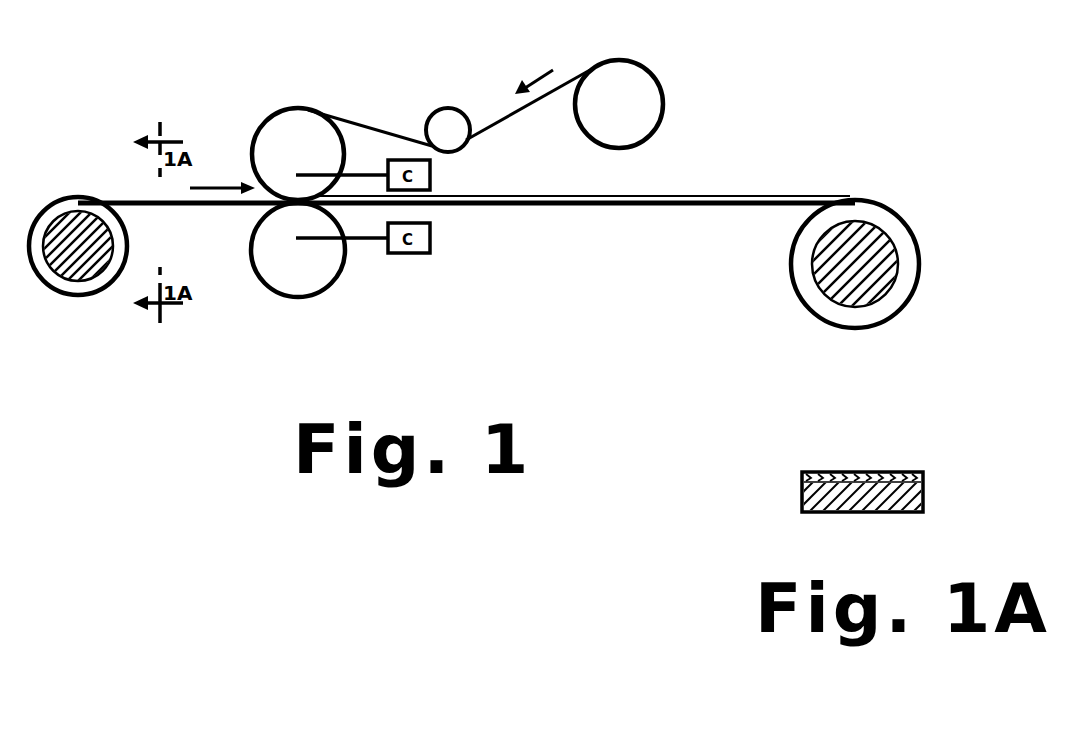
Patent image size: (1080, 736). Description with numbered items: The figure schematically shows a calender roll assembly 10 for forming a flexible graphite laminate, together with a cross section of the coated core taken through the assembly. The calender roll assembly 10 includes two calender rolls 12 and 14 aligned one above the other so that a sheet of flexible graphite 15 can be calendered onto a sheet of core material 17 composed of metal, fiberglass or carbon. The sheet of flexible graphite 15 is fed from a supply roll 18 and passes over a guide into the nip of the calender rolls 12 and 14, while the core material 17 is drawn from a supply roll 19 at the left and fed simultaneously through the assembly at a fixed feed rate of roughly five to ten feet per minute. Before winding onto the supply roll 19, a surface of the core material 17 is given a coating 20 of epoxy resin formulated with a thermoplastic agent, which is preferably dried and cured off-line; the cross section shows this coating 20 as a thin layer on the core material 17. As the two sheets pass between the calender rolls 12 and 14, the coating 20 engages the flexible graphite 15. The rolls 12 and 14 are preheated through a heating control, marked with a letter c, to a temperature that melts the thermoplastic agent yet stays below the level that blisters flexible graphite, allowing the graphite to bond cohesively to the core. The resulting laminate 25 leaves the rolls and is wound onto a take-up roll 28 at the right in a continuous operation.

In FIG. 1, the calender roll assembly 10 is at (196, 127).
In FIG. 1, the calender roll 12 is at (291, 142).
In FIG. 1, the calender roll 14 is at (278, 270).
In FIG. 1, the sheet of flexible graphite 15 is at (366, 120).
In FIG. 1, the sheet of core material 17 is at (125, 200).
In FIG. 1A, the sheet of core material 17 is at (805, 495).
In FIG. 1, the supply roll 18 is at (634, 95).
In FIG. 1, the supply roll 19 is at (85, 265).
In FIG. 1A, the coating 20 is at (843, 480).
In FIG. 1, the laminate 25 is at (637, 196).
In FIG. 1, the take-up roll 28 is at (873, 200).